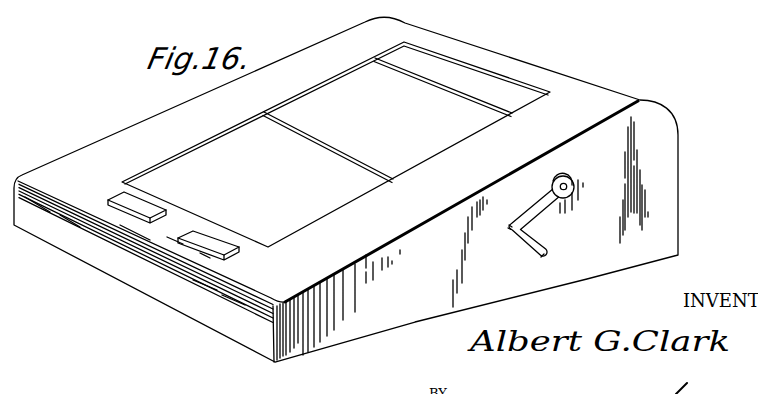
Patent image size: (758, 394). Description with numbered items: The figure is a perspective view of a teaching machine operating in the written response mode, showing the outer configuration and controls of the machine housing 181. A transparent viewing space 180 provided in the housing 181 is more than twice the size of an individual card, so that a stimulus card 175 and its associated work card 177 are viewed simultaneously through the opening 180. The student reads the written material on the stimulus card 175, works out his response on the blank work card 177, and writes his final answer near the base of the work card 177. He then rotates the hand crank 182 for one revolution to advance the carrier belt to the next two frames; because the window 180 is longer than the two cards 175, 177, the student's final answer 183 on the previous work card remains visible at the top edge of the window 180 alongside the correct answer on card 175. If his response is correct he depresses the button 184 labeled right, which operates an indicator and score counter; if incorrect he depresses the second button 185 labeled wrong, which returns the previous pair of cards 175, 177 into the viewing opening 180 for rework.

The stimulus card 175 is at (427, 148).
The work card 177 is at (300, 210).
The transparent viewing space 180 is at (307, 108).
The machine housing 181 is at (652, 128).
The hand crank 182 is at (536, 254).
The student's final answer 183 is at (493, 72).
The right button 184 is at (116, 197).
The wrong button 185 is at (236, 252).